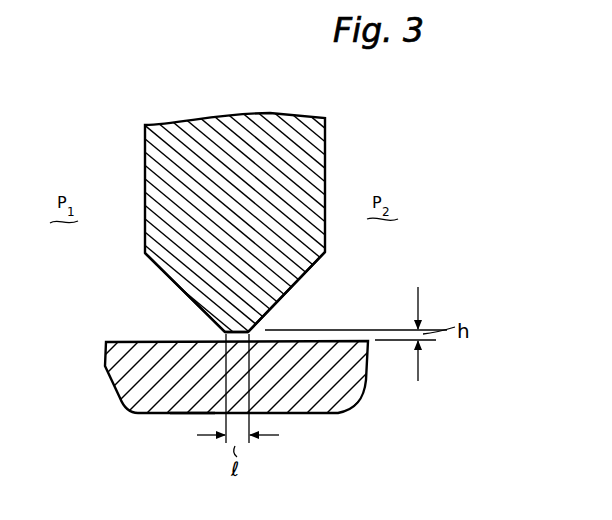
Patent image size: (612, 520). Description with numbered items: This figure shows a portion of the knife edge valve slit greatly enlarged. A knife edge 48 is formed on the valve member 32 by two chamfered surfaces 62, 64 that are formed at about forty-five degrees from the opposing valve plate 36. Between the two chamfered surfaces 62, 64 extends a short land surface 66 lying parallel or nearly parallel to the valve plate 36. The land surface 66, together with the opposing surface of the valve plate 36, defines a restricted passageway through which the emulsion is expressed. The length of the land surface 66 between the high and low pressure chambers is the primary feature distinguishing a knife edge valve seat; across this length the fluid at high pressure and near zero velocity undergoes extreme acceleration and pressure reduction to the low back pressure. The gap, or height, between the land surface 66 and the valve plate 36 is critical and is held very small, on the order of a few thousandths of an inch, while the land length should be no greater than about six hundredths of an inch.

The valve member 32 is at (145, 152).
The chamfered surface 62 is at (176, 285).
The chamfered surface 64 is at (298, 281).
The knife edge 48 is at (224, 333).
The valve plate 36 is at (114, 382).
The land surface 66 is at (193, 413).